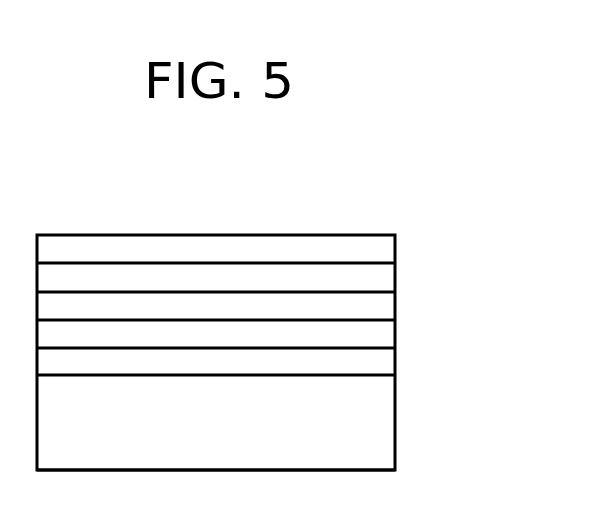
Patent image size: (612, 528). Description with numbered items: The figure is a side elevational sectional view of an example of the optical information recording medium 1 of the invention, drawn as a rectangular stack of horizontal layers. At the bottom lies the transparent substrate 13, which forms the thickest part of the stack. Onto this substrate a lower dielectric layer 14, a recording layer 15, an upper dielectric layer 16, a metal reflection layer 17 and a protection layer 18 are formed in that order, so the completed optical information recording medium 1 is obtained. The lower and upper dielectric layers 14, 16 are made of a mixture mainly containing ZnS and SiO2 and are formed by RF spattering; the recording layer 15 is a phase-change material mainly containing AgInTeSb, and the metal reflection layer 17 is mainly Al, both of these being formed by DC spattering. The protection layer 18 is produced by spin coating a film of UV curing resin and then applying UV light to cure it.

The optical information recording medium 1 is at (369, 219).
The transparent substrate 13 is at (383, 440).
The lower dielectric layer 14 is at (386, 362).
The recording layer 15 is at (388, 335).
The upper dielectric layer 16 is at (388, 305).
The metal reflection layer 17 is at (388, 276).
The protection layer 18 is at (387, 246).